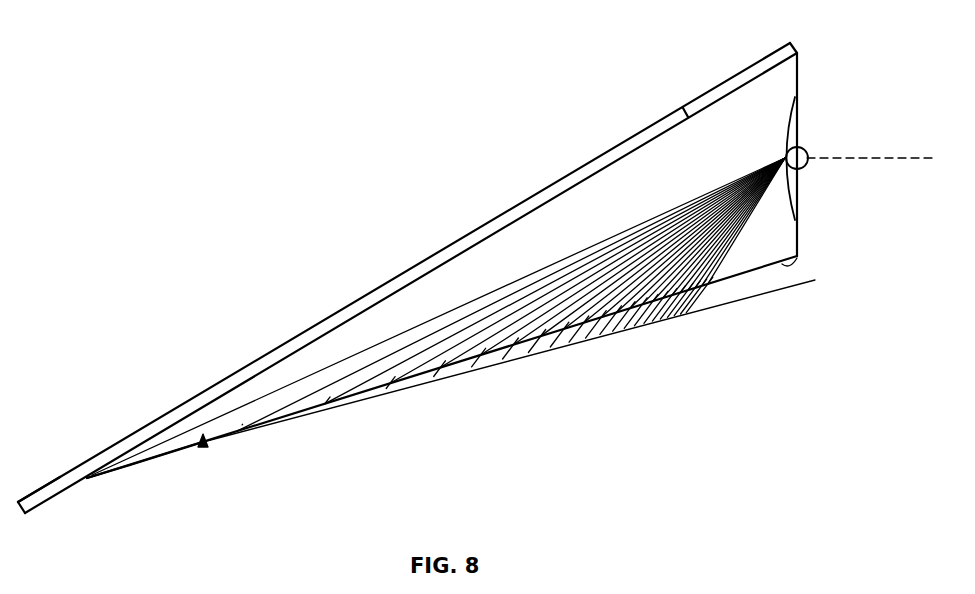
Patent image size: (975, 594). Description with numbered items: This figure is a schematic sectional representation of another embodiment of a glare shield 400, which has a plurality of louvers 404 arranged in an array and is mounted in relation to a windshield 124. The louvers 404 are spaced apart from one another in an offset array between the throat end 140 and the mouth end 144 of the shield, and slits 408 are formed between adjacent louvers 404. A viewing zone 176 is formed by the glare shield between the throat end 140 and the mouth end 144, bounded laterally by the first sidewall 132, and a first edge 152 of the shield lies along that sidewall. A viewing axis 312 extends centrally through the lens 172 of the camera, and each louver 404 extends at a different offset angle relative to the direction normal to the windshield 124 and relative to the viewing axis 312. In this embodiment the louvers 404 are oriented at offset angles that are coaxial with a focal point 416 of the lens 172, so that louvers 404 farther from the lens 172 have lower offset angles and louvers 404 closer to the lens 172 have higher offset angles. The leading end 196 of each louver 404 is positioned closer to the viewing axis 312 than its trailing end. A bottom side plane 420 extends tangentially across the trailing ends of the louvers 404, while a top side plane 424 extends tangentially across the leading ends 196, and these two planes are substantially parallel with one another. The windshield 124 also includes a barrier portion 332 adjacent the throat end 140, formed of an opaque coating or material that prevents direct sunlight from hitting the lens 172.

The windshield 124 is at (567, 183).
The first sidewall 132 is at (492, 258).
The barrier portion 332 is at (738, 82).
The throat end 140 is at (798, 73).
The lens 172 is at (795, 123).
The viewing axis 312 is at (893, 156).
The focal point 416 is at (804, 168).
The viewing zone 176 is at (390, 322).
The leading end 196 is at (247, 408).
The bottom side plane 420 is at (786, 288).
The top side plane 424 is at (793, 266).
The glare shield 400 is at (650, 362).
The mouth end 144 is at (88, 472).
The first edge 152 is at (97, 478).
The louvers 404 is at (143, 461).
The slits 408 is at (203, 447).